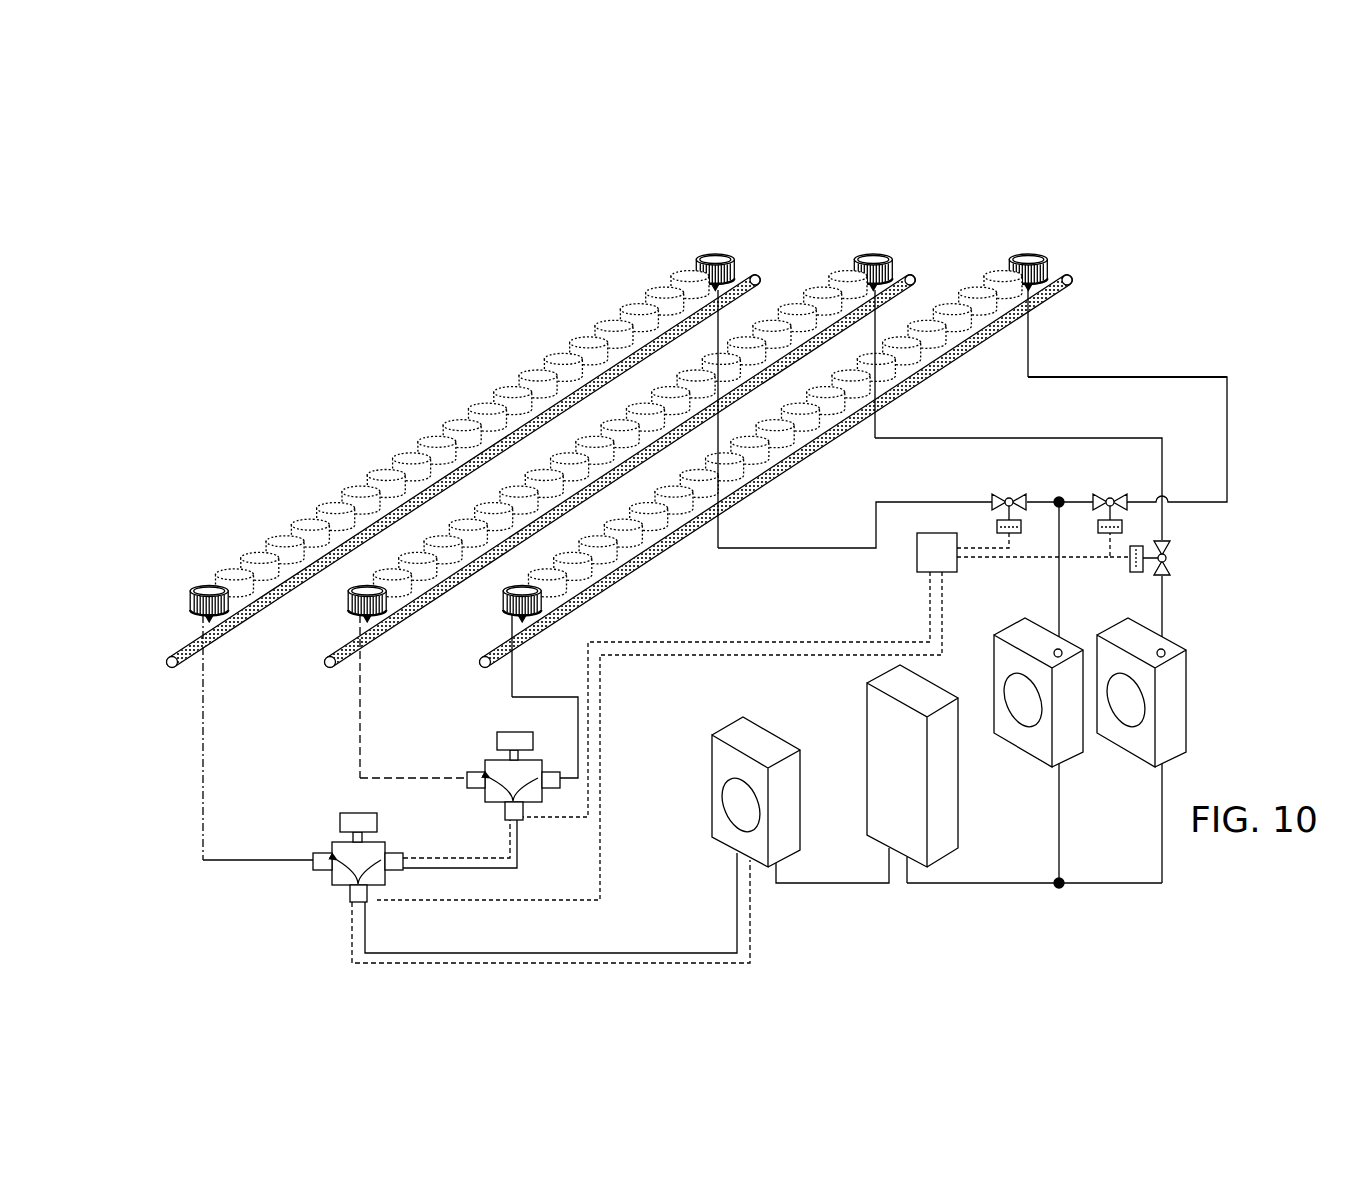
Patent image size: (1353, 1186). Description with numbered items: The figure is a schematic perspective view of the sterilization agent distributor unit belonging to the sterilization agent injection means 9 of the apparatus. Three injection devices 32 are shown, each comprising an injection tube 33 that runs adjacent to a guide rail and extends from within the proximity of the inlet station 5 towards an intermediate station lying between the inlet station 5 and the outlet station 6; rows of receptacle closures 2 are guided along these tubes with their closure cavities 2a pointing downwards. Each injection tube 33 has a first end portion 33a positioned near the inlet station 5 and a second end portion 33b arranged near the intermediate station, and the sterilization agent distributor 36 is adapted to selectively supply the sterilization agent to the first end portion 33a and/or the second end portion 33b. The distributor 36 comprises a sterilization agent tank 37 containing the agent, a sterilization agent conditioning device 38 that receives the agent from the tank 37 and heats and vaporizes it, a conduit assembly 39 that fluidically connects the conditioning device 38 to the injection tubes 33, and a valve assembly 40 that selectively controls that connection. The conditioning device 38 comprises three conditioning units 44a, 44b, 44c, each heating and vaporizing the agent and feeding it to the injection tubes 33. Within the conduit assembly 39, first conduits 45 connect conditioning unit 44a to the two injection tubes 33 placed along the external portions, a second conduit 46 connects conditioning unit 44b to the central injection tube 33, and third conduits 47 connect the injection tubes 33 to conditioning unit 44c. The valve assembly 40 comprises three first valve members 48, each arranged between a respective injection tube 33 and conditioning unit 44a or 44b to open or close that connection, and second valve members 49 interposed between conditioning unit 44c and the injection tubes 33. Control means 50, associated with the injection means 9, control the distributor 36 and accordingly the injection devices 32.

The receptacle closure 2 is at (717, 256).
The closure cavity 2a is at (736, 297).
The inlet station 5 is at (950, 212).
The outlet station 6 is at (300, 708).
The sterilization agent injection means 9 is at (263, 432).
The injection device 32 is at (168, 665).
The injection tube 33 is at (620, 355).
The first end portion 33a is at (740, 283).
The second end portion 33b is at (167, 655).
The sterilization agent distributor 36 is at (1016, 721).
The sterilization agent tank 37 is at (937, 798).
The sterilization agent conditioning device 38 is at (1190, 700).
The conduit assembly 39 is at (1174, 366).
The valve assembly 40 is at (1132, 513).
The conditioning unit 44a is at (1067, 745).
The conditioning unit 44b is at (1178, 742).
The conditioning unit 44c is at (787, 802).
The first conduits 45 is at (1232, 432).
The second conduit 46 is at (1070, 438).
The third conduits 47 is at (540, 700).
The first valve member 48 is at (1009, 494).
The second valve member 49 is at (505, 768).
The control means 50 is at (925, 560).